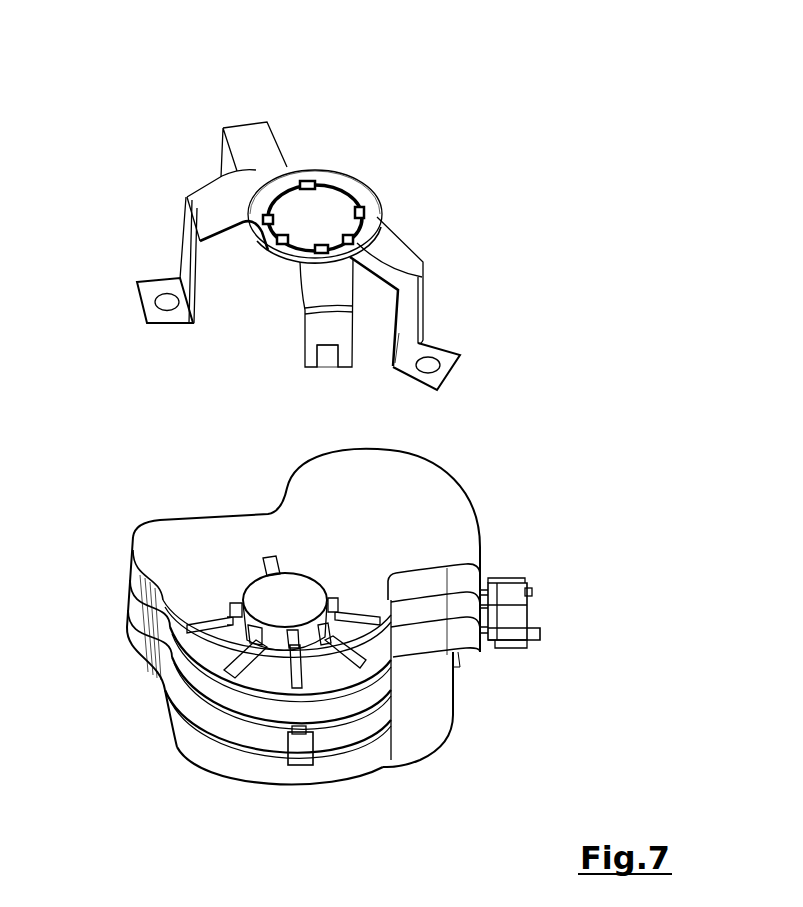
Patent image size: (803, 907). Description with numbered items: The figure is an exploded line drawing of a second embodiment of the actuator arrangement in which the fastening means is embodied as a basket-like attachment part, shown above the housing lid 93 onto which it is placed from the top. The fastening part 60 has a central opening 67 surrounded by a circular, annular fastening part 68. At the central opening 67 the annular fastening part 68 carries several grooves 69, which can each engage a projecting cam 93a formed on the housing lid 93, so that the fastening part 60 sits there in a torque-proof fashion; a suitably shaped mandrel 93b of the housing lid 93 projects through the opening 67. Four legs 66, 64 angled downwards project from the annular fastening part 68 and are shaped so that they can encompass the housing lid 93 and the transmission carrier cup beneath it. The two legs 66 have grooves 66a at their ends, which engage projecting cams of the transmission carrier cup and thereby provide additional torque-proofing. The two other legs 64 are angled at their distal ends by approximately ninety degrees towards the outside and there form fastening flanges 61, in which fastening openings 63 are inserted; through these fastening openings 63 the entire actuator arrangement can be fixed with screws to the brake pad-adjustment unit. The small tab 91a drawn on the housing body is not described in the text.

The fastening means 60 is at (375, 172).
The fastening flange 61 is at (148, 288).
The fastening opening 63 is at (167, 302).
The leg 64 is at (210, 207).
The leg 66 is at (253, 137).
The groove 66a is at (225, 169).
The central opening 67 is at (321, 217).
The annular fastening part 68 is at (325, 178).
The groove 69 is at (305, 183).
The latch tab 91a is at (302, 752).
The housing lid 93 is at (177, 550).
The cam 93a is at (240, 648).
The mandrel 93b is at (283, 605).